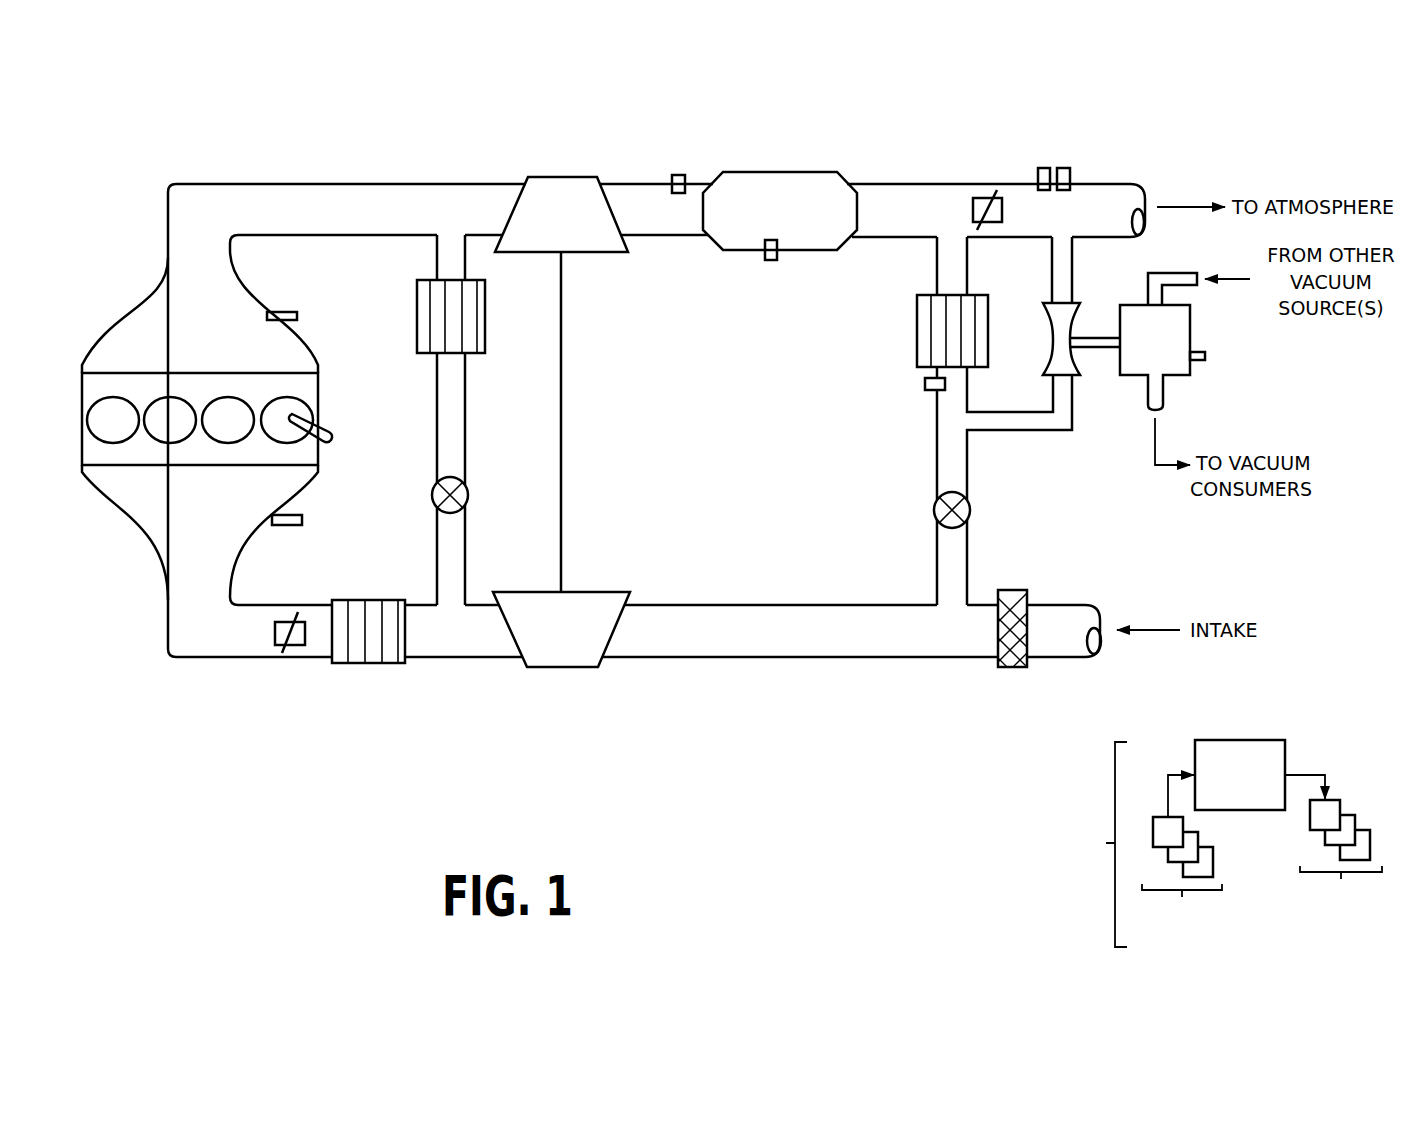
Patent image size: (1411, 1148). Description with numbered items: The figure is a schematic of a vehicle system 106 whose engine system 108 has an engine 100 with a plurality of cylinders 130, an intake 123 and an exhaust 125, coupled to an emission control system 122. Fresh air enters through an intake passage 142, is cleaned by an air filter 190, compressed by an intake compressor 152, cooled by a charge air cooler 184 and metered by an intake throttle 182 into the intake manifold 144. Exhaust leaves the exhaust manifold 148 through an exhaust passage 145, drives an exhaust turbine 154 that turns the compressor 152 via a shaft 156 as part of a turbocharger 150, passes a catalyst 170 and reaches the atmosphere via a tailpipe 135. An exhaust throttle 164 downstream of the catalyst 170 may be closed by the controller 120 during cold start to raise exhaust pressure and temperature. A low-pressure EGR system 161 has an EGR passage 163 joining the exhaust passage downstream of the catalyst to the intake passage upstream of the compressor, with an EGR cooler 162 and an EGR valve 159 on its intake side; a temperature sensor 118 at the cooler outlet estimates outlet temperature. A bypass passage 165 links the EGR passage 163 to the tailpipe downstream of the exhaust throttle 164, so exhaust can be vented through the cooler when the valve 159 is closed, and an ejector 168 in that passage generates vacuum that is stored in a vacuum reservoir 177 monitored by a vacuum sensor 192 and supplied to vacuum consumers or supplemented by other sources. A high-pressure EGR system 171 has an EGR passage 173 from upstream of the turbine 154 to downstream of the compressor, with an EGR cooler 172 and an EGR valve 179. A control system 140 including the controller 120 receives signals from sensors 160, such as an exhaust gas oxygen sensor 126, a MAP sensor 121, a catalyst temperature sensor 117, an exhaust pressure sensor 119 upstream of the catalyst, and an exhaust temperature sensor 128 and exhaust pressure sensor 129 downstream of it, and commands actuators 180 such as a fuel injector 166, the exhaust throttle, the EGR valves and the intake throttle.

The engine 100 is at (178, 373).
The vehicle system 106 is at (1270, 101).
The engine system 108 is at (122, 176).
The exhaust catalyst temperature sensor 117 is at (771, 260).
The temperature sensor 118 is at (925, 384).
The exhaust pressure sensor 119 is at (679, 176).
The controller 120 is at (1240, 775).
The MAP sensor 121 is at (275, 525).
The emission control system 122 is at (758, 142).
The intake 123 is at (207, 713).
The exhaust 125 is at (237, 142).
The exhaust gas oxygen sensor 126 is at (267, 312).
The exhaust temperature sensor 128 is at (1043, 168).
The exhaust pressure sensor 129 is at (1064, 168).
The cylinders 130 is at (100, 400).
The tailpipe 135 is at (1132, 183).
The control system 140 is at (1205, 843).
The intake passage 142 is at (1055, 605).
The intake manifold 144 is at (591, 561).
The exhaust passage 145 is at (268, 184).
The exhaust manifold 148 is at (200, 311).
The turbocharger 150 is at (566, 396).
The intake compressor 152 is at (563, 668).
The exhaust turbine 154 is at (568, 177).
The shaft 156 is at (563, 432).
The EGR valve 159 is at (969, 503).
The sensors 160 is at (1182, 858).
The low-pressure EGR system 161 is at (841, 384).
The EGR cooler 162 is at (917, 318).
The EGR passage 163 is at (937, 452).
The exhaust throttle 164 is at (973, 210).
The bypass passage 165 is at (985, 412).
The fuel injector 166 is at (332, 440).
The ejector 168 is at (1078, 313).
The catalyst 170 is at (780, 211).
The high-pressure EGR system 171 is at (399, 371).
The EGR cooler 172 is at (417, 312).
The EGR passage 173 is at (437, 430).
The vacuum reservoir 177 is at (1158, 341).
The EGR valve 179 is at (467, 488).
The actuators 180 is at (1335, 849).
The intake throttle 182 is at (275, 640).
The charge air cooler 184 is at (355, 600).
The air filter 190 is at (1012, 590).
The vacuum sensor 192 is at (1200, 360).